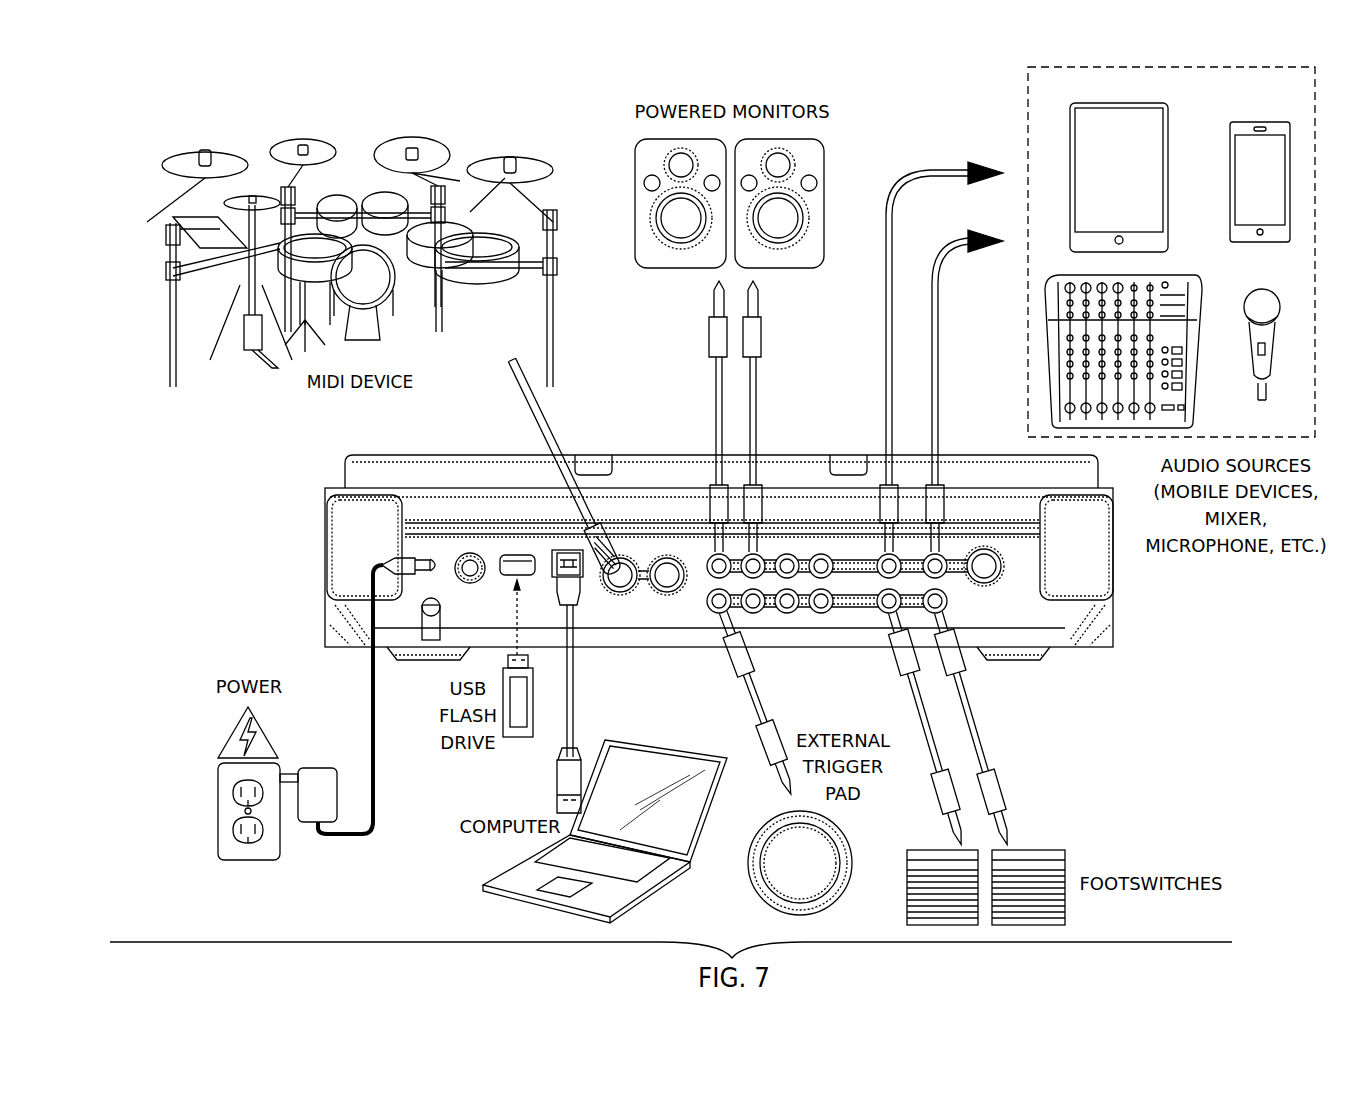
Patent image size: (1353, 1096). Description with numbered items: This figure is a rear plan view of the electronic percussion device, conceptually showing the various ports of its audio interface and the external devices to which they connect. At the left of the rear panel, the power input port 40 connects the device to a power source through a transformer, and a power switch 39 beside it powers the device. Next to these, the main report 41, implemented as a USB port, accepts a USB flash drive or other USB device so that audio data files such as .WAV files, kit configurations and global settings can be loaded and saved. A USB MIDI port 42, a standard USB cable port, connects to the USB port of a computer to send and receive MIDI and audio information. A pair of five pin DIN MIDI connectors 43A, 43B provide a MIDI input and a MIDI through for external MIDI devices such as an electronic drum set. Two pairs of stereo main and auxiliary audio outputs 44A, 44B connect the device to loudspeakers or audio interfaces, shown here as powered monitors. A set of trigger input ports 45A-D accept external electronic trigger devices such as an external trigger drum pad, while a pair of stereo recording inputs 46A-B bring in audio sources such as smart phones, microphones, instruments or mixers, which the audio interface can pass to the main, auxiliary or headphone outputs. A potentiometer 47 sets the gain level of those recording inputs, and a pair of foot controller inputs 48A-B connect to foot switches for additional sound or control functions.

The power switch 39 is at (467, 550).
The power input port 40 is at (430, 558).
The main report 41 is at (515, 552).
The USB MIDI port 42 is at (567, 548).
The five pin DIN MIDI connector 43A is at (626, 592).
The five pin DIN MIDI connector 43B is at (670, 593).
The stereo main audio output 44A is at (760, 552).
The stereo auxiliary audio output 44B is at (795, 552).
The trigger input ports 45A-D is at (705, 640).
The stereo recording inputs 46A-B is at (942, 552).
The potentiometer 47 is at (994, 578).
The foot controller inputs 48A-B is at (945, 607).